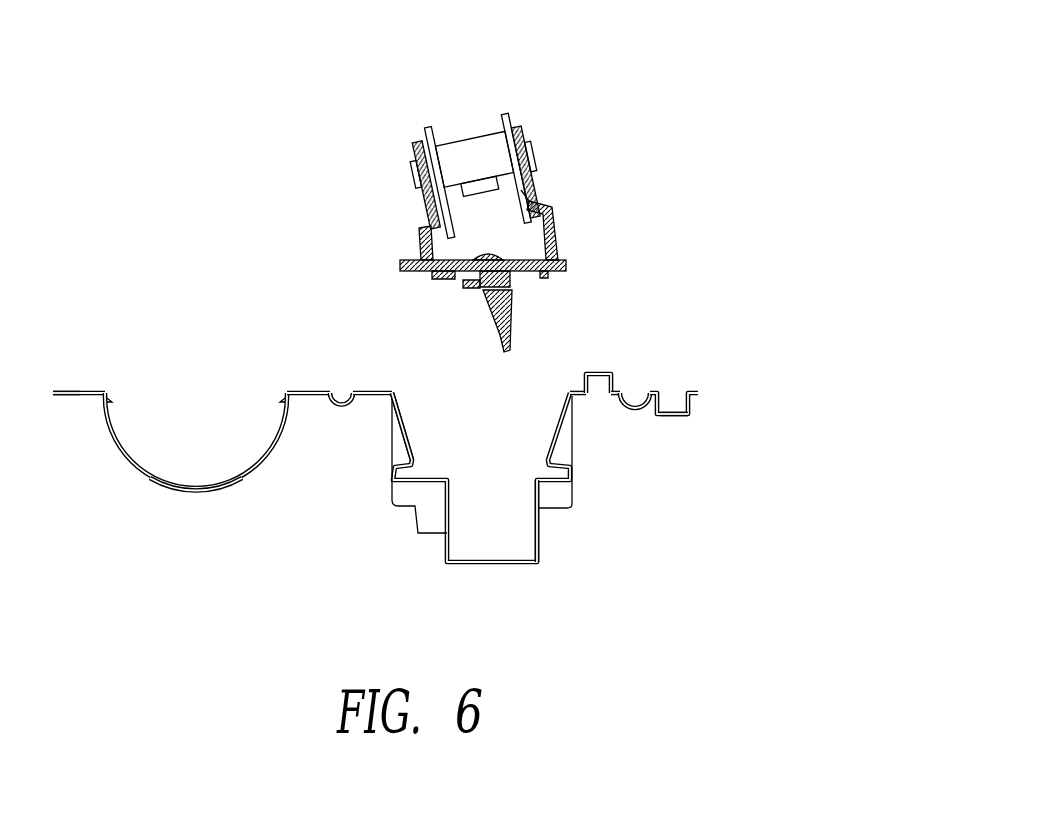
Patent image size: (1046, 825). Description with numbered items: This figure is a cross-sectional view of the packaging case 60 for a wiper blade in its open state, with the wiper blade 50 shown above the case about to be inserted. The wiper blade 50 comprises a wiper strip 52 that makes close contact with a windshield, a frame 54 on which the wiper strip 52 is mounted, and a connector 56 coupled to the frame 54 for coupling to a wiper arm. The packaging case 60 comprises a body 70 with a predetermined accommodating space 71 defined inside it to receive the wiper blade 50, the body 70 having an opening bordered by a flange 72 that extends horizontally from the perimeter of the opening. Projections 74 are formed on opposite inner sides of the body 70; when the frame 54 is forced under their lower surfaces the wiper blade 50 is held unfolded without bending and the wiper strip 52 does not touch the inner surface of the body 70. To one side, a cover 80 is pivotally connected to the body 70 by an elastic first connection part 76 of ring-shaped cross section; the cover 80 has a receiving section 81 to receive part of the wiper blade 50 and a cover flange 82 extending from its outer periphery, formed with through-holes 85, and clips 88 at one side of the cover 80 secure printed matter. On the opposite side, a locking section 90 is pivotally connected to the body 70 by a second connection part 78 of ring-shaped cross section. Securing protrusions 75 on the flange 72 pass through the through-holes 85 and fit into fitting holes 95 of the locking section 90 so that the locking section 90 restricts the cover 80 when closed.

The wiper blade 50 is at (473, 122).
The wiper strip 52 is at (487, 296).
The frame 54 is at (558, 266).
The connector 56 is at (530, 192).
The packaging case 60 is at (223, 253).
The body 70 is at (433, 520).
The accommodating space 71 is at (502, 450).
The flange 72 is at (613, 398).
The projections 74 is at (407, 400).
The securing protrusions 75 is at (596, 371).
The first connection part 76 is at (334, 409).
The second connection part 78 is at (635, 408).
The cover 80 is at (193, 490).
The receiving section 81 is at (192, 408).
The cover flange 82 is at (58, 391).
The through-holes 85 is at (63, 397).
The clips 88 is at (108, 392).
The locking section 90 is at (690, 392).
The fitting holes 95 is at (689, 413).